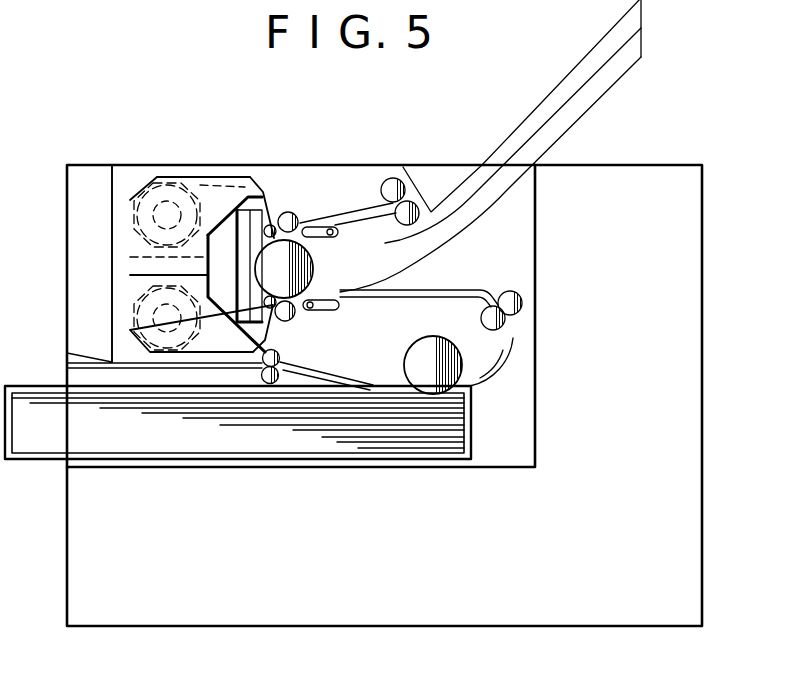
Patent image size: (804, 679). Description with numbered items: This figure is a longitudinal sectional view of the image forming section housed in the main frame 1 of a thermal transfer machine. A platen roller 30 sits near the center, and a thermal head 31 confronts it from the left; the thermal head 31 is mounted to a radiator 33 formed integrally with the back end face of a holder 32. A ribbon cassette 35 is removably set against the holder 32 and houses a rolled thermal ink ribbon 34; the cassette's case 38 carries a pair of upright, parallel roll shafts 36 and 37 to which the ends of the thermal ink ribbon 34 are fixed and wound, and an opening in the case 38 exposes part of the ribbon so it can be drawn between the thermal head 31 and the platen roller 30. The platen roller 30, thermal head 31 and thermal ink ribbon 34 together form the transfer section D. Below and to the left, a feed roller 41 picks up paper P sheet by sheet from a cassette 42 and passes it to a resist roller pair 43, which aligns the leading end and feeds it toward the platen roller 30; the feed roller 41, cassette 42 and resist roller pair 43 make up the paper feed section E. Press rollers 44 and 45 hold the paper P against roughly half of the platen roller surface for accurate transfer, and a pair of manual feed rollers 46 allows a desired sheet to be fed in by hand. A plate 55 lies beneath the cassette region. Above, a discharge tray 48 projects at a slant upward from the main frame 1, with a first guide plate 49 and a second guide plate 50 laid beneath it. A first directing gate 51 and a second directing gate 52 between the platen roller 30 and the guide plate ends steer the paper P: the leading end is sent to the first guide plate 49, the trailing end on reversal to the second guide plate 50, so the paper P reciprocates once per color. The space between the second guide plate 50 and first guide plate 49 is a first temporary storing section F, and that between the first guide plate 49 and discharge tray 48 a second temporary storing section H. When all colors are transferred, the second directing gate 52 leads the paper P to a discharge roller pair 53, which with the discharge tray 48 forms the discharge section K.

The main frame 1 is at (688, 285).
The platen roller 30 is at (315, 266).
The thermal head 31 is at (260, 190).
The holder 32 is at (222, 257).
The radiator 33 is at (252, 185).
The thermal ink ribbon 34 is at (305, 205).
The ribbon cassette 35 is at (193, 176).
The roll shaft 36 is at (157, 198).
The roll shaft 37 is at (135, 318).
The case 38 is at (130, 220).
The feed roller 41 is at (436, 348).
The cassette 42 is at (472, 437).
The resist roller pair 43 is at (507, 290).
The press roller 44 is at (292, 319).
The press roller 45 is at (317, 213).
The manual feed rollers 46 is at (268, 386).
The discharge tray 48 is at (561, 82).
The first guide plate 49 is at (558, 108).
The second guide plate 50 is at (587, 112).
The first directing gate 51 is at (336, 311).
The second directing gate 52 is at (338, 237).
The discharge roller pair 53 is at (397, 178).
The guide plate 55 is at (67, 353).
The transfer section D is at (311, 178).
The paper feed section E is at (405, 336).
The first temporary storing section F is at (449, 246).
The second temporary storing section H is at (449, 203).
The discharge section K is at (392, 178).
The paper P is at (393, 445).